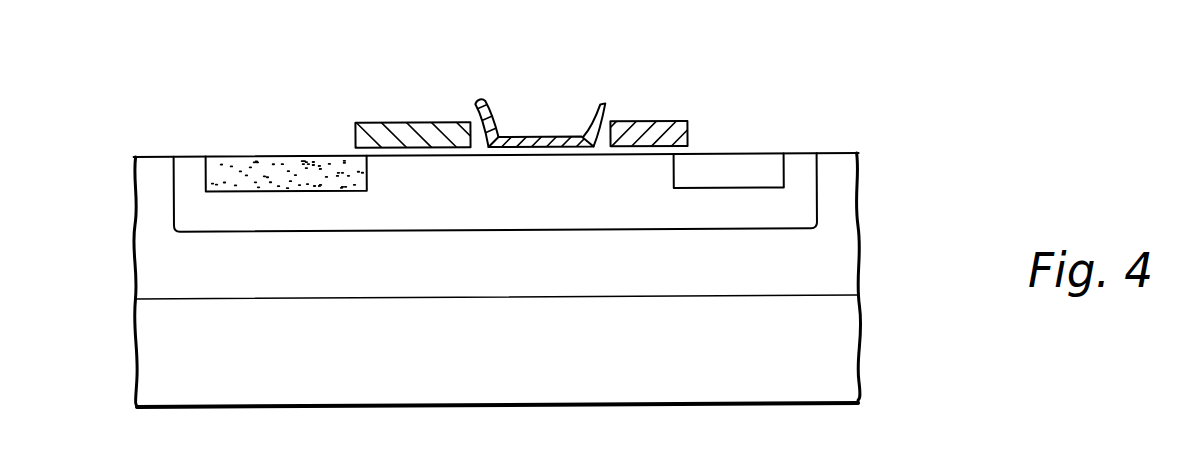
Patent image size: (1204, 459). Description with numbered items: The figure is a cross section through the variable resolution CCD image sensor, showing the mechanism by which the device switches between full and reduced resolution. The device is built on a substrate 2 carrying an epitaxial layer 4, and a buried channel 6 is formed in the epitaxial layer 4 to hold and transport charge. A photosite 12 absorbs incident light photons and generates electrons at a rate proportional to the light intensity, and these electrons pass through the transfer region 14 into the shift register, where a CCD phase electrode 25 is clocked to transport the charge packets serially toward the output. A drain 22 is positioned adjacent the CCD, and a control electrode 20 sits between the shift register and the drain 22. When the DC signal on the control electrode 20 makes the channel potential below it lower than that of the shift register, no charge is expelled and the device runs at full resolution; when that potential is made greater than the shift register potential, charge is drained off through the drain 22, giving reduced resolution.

The substrate 2 is at (835, 331).
The epitaxial layer 4 is at (833, 274).
The buried channel 6 is at (803, 174).
The photosites 12 is at (278, 168).
The transfer region 14 is at (407, 133).
The control electrode 20 is at (672, 133).
The drain 22 is at (765, 166).
The CCD phase electrode 25 is at (547, 140).